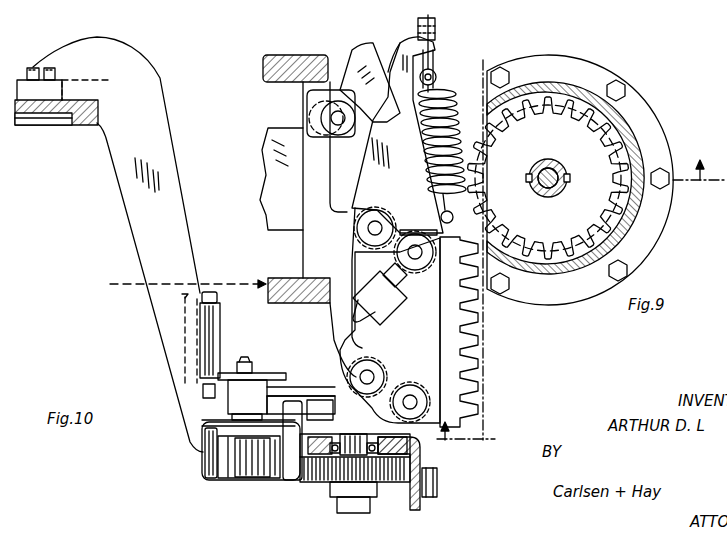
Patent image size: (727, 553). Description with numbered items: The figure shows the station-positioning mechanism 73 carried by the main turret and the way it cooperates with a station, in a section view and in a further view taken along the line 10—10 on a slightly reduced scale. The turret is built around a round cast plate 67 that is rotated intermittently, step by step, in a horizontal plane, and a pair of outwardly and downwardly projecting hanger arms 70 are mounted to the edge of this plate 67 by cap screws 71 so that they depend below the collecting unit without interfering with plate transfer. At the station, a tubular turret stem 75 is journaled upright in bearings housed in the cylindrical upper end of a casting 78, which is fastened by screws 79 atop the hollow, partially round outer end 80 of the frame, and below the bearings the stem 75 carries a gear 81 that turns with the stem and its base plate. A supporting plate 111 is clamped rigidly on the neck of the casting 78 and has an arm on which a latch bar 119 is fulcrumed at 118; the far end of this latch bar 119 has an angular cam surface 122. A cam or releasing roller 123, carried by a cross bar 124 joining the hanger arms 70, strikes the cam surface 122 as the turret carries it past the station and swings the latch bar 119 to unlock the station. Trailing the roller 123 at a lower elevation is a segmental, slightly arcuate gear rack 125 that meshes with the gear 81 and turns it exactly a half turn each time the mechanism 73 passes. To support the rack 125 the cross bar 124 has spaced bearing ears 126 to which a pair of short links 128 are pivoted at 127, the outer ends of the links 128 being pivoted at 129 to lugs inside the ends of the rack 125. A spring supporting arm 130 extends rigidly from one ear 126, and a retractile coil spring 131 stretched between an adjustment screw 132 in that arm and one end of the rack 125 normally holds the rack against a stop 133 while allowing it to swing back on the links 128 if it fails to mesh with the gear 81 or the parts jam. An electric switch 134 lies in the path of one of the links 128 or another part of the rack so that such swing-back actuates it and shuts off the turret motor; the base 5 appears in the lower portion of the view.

In FIG. 10, the base 5 is at (352, 432).
In FIG. 9, the section line 10- 10 is at (582, 265).
In FIG. 10, the round cast plate 67 is at (82, 122).
In FIG. 10, the hanger or bracket arms 70 is at (128, 230).
In FIG. 9, the hanger or bracket arms 70 is at (263, 62).
In FIG. 10, the cap screws 71 is at (32, 68).
In FIG. 10, the mechanism 73 is at (200, 448).
In FIG. 9, the tubular turret stem or shaft 75 is at (546, 160).
In FIG. 10, the casting 78 is at (440, 483).
In FIG. 9, the casting 78 is at (570, 87).
In FIG. 9, the screws 79 is at (622, 88).
In FIG. 10, the outer end of the frame 80 is at (425, 510).
In FIG. 10, the gear 81 is at (320, 481).
In FIG. 9, the gear 81 is at (625, 137).
In FIG. 10, the supporting plate 111 is at (296, 398).
In FIG. 10, the fulcrum 118 is at (243, 360).
In FIG. 10, the latch bar 119 is at (270, 371).
In FIG. 9, the latch bar 119 is at (389, 70).
In FIG. 9, the angular cam surface 122 is at (357, 87).
In FIG. 10, the cam or releasing roller 123 is at (222, 296).
In FIG. 9, the cam or releasing roller 123 is at (326, 99).
In FIG. 10, the cross bar 124 is at (187, 412).
In FIG. 9, the cross bar 124 is at (314, 121).
In FIG. 10, the segmental gear rack 125 is at (293, 466).
In FIG. 9, the segmental gear rack 125 is at (476, 378).
In FIG. 10, the bearing ears 126 is at (212, 481).
In FIG. 9, the bearing ears 126 is at (370, 215).
In FIG. 9, the pivot 127 is at (372, 230).
In FIG. 10, the short links 128 is at (242, 477).
In FIG. 9, the short links 128 is at (407, 390).
In FIG. 9, the pivot 129 is at (420, 270).
In FIG. 9, the spring supporting arm 130 is at (397, 135).
In FIG. 9, the retractile coil spring 131 is at (455, 92).
In FIG. 9, the adjustment screw 132 is at (438, 62).
In FIG. 9, the stop 133 is at (437, 222).
In FIG. 9, the electric switch 134 is at (395, 310).